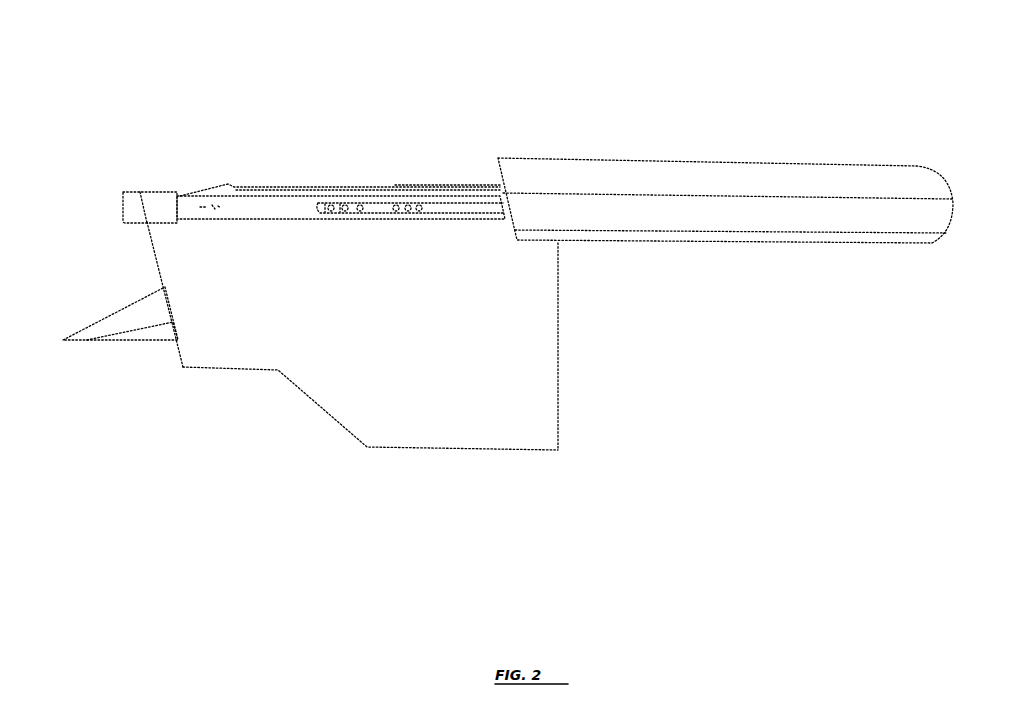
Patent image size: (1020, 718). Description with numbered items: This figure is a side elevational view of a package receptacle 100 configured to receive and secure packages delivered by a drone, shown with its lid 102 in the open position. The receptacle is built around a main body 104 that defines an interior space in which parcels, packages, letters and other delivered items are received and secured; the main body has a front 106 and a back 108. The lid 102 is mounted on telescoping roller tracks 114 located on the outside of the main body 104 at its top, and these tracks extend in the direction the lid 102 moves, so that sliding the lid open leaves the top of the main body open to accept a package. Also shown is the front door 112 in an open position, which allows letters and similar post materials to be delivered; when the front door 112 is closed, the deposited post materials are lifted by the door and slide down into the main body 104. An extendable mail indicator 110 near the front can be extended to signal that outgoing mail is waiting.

The package receptacle 100 is at (358, 55).
The lid 102 is at (746, 163).
The main body 104 is at (305, 394).
The front 106 is at (182, 352).
The back 108 is at (559, 368).
The extendable mail indicator 110 is at (126, 205).
The front door 112 is at (97, 325).
The telescoping roller tracks 114 is at (372, 200).